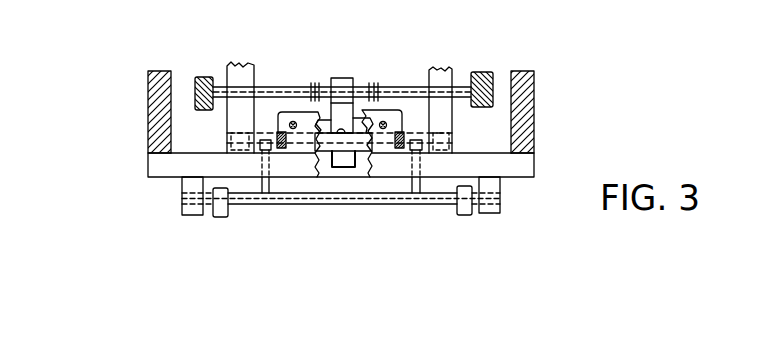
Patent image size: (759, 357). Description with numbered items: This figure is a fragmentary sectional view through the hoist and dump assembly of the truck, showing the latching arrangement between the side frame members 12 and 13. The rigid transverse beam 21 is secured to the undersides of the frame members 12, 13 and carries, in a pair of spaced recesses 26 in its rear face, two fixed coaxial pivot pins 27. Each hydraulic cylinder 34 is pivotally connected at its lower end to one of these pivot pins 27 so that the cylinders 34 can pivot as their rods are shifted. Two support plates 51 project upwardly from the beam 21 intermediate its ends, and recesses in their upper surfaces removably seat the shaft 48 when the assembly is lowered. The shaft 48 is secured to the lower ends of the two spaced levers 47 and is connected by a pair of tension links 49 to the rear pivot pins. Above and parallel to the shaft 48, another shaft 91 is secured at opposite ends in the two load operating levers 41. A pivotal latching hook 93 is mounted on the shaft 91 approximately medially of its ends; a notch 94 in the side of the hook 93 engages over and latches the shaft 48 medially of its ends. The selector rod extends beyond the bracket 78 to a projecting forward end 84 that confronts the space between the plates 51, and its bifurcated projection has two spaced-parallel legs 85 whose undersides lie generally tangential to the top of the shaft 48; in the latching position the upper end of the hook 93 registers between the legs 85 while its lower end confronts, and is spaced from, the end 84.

The frame member 12 is at (535, 85).
The frame member 13 is at (148, 93).
The beam 21 is at (527, 160).
The recess 26 is at (182, 185).
The pivot pin 27 is at (280, 195).
The hydraulic cylinder 34 is at (215, 216).
The load operating lever 41 is at (198, 76).
The lever 47 is at (233, 63).
The shaft 48 is at (421, 140).
The tension link 49 is at (283, 149).
The support plate 51 is at (262, 186).
The bracket 78 is at (402, 112).
The forward end of selector rod 84 is at (368, 130).
The leg 85 is at (293, 121).
The shaft 91 is at (262, 88).
The latching hook 93 is at (342, 78).
The notch 94 is at (335, 131).